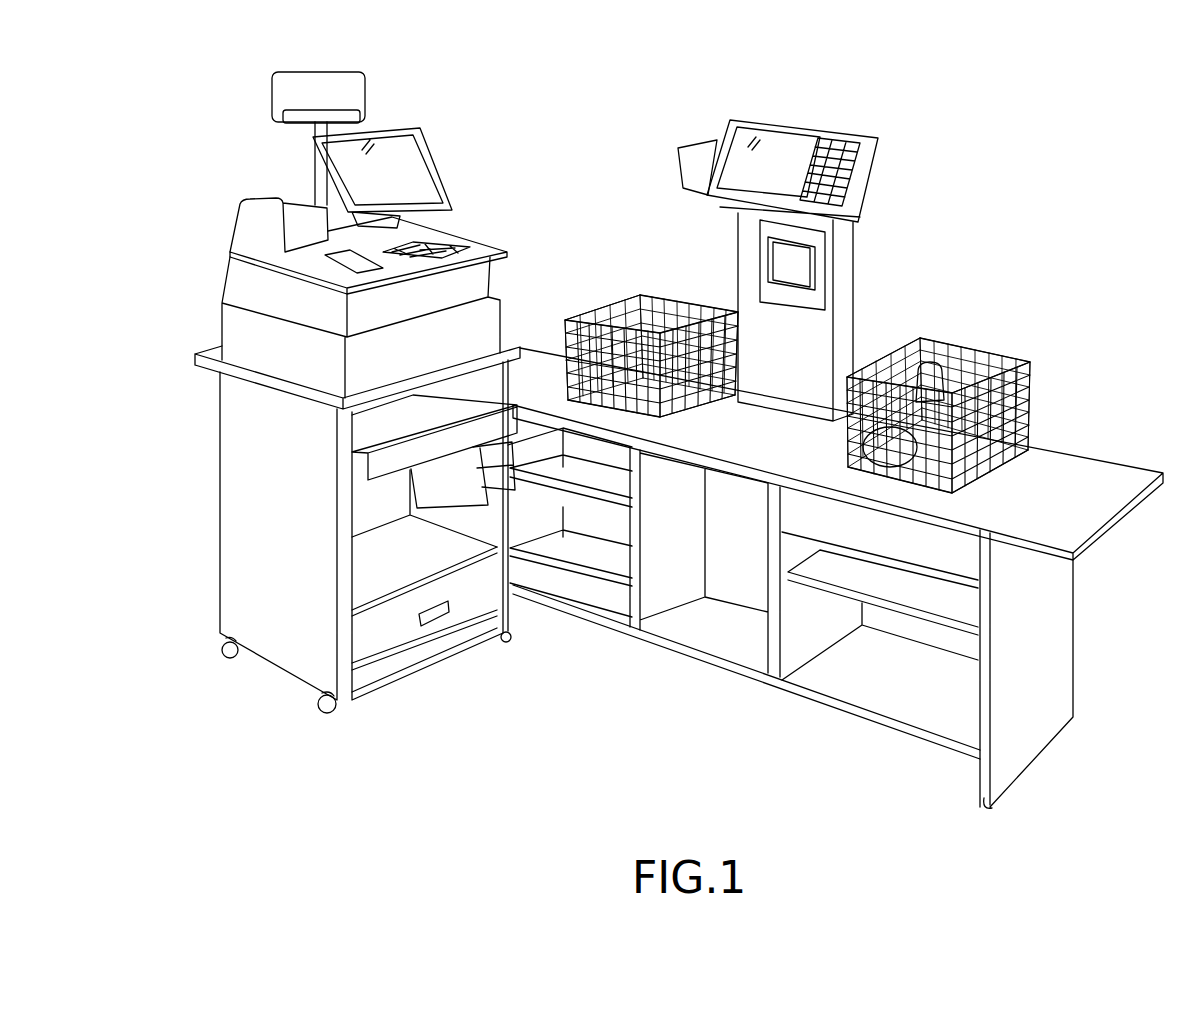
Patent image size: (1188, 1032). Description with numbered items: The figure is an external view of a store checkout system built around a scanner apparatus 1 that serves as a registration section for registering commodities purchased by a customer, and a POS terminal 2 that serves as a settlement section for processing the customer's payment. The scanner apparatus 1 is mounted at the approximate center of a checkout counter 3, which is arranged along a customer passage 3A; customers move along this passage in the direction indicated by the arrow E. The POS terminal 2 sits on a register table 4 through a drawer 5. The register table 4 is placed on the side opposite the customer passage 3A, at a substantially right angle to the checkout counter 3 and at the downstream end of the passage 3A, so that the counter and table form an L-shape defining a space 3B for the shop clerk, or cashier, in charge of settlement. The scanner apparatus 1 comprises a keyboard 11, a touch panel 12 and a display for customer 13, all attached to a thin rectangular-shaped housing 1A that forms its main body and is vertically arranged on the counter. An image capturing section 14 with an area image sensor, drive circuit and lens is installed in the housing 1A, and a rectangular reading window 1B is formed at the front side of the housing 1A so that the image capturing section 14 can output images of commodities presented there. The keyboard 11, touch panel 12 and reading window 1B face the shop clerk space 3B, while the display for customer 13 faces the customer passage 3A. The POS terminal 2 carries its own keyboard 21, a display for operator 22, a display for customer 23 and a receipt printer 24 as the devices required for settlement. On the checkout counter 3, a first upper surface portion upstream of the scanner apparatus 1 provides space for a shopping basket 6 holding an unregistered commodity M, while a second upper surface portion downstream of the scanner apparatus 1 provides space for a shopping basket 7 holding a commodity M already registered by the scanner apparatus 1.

The scanner apparatus 1 is at (868, 226).
The housing 1A is at (852, 302).
The reading window 1B is at (757, 262).
The keyboard 11 is at (852, 135).
The touch panel 12 is at (786, 122).
The display for customer 13 is at (676, 158).
The image capturing section 14 is at (808, 260).
The POS terminal 2 is at (226, 254).
The keyboard 21 is at (440, 245).
The display for operator 22 is at (433, 150).
The display for customer 23 is at (367, 87).
The receipt printer 24 is at (265, 203).
The checkout counter 3 is at (1075, 460).
The customer passage 3A is at (1108, 688).
The space for a shop clerk 3B is at (642, 762).
The register table 4 is at (217, 498).
The drawer 5 is at (215, 330).
The shopping basket 6 is at (1022, 350).
The shopping basket 7 is at (608, 303).
The commodity M is at (950, 352).
The arrow E is at (1096, 637).